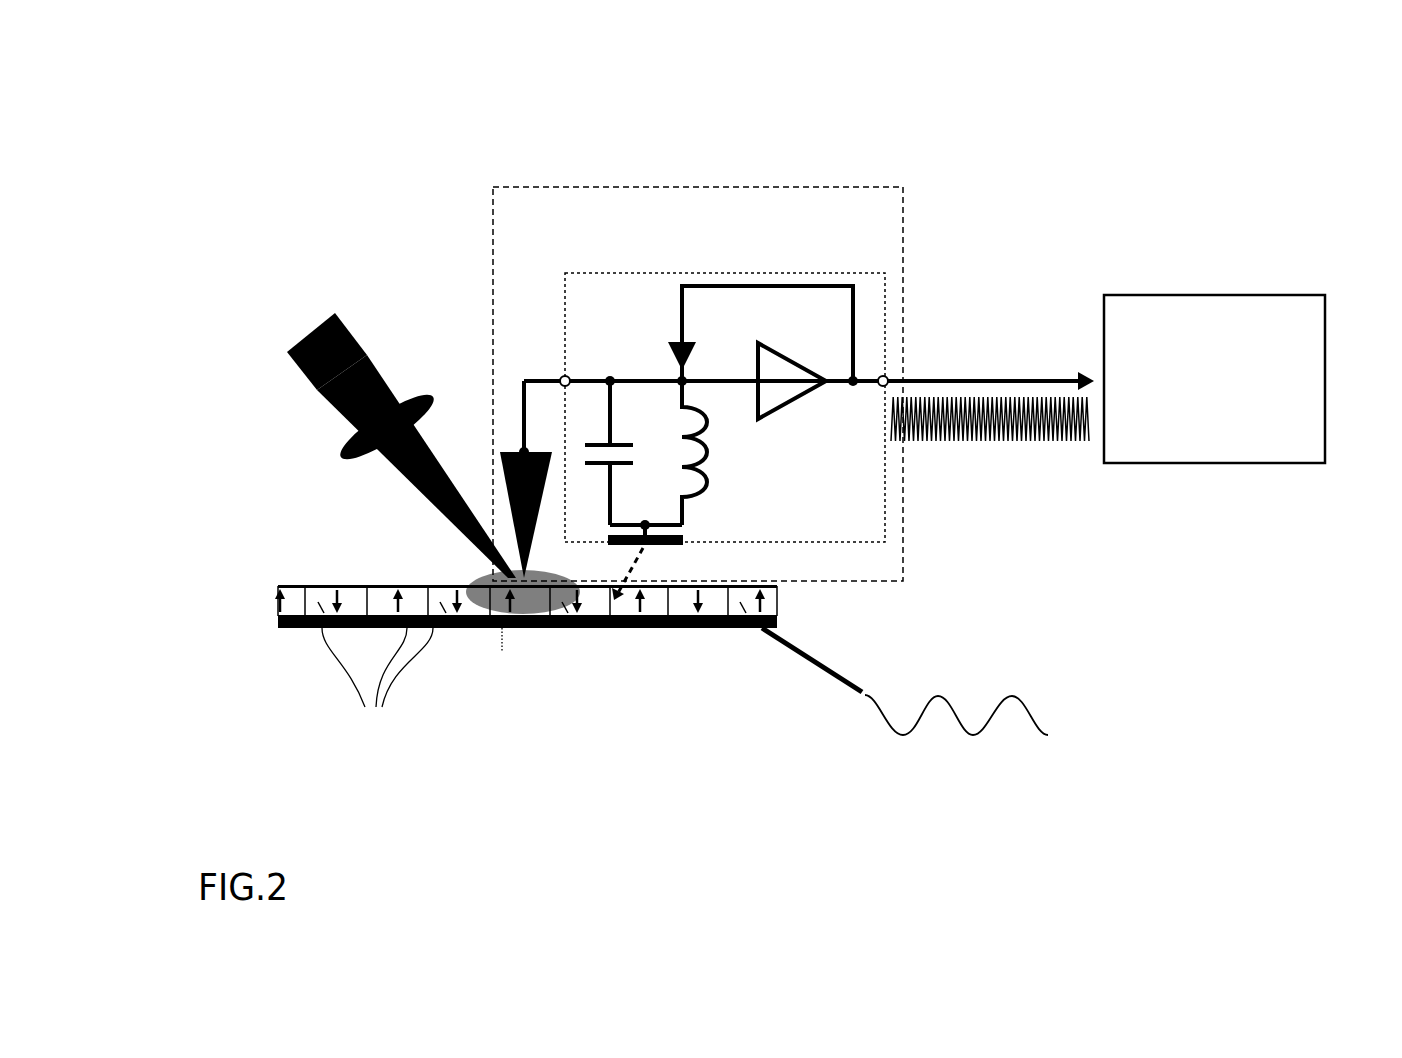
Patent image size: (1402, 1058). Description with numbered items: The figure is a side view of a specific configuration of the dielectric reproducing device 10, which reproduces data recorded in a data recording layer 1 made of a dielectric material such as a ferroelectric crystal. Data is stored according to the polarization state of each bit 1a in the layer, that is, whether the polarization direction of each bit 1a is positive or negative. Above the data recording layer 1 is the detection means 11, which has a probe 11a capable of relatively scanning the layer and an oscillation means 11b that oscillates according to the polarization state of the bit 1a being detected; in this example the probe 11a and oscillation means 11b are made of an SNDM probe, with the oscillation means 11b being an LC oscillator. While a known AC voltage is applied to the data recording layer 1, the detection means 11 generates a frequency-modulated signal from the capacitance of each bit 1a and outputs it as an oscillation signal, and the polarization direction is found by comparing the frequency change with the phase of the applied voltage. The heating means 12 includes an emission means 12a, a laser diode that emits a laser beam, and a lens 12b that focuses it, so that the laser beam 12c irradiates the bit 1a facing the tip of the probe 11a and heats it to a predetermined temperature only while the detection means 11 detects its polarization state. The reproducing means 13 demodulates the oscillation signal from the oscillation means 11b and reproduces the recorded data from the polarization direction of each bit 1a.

The dielectric reproducing device 10 is at (243, 185).
The data recording layer 1 is at (278, 585).
The bit 1a is at (377, 698).
The detection means 11 is at (904, 237).
The probe 11a is at (522, 537).
The oscillation means 11b is at (782, 272).
The heating means 12 is at (310, 337).
The emission means 12a is at (298, 368).
The lens 12b is at (343, 458).
The laser beam 12c is at (485, 550).
The reproducing means 13 is at (1216, 295).